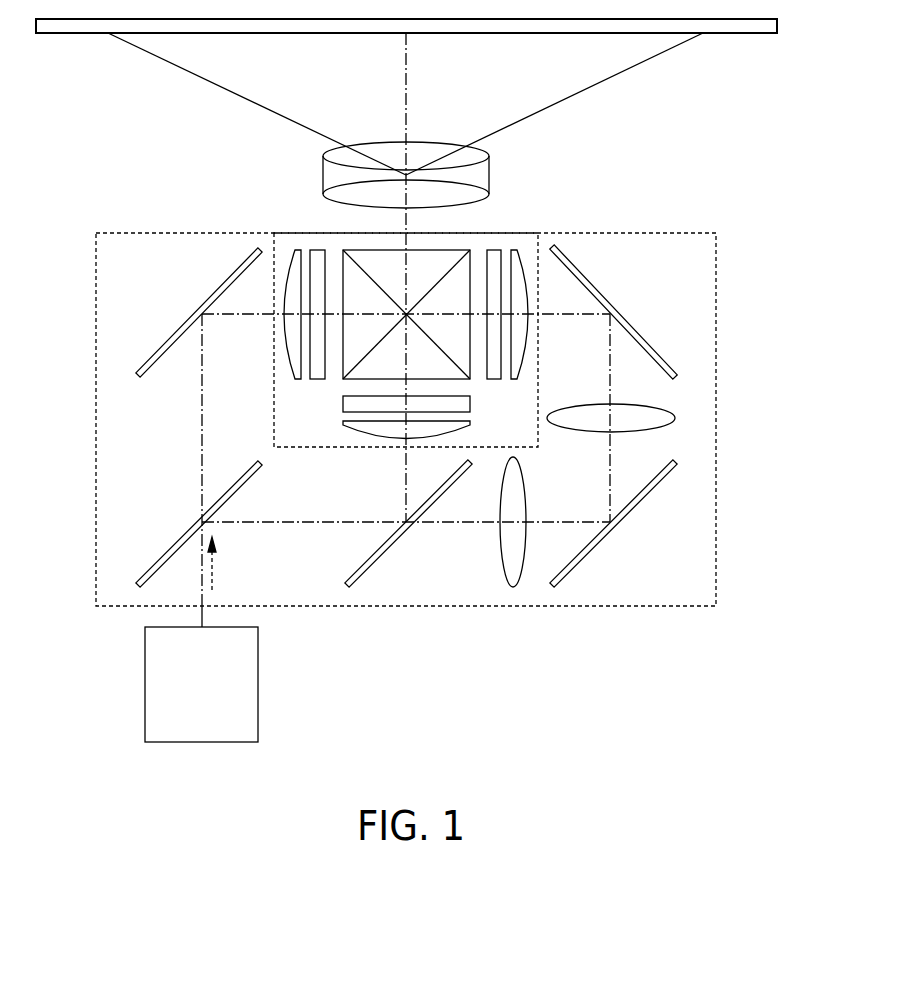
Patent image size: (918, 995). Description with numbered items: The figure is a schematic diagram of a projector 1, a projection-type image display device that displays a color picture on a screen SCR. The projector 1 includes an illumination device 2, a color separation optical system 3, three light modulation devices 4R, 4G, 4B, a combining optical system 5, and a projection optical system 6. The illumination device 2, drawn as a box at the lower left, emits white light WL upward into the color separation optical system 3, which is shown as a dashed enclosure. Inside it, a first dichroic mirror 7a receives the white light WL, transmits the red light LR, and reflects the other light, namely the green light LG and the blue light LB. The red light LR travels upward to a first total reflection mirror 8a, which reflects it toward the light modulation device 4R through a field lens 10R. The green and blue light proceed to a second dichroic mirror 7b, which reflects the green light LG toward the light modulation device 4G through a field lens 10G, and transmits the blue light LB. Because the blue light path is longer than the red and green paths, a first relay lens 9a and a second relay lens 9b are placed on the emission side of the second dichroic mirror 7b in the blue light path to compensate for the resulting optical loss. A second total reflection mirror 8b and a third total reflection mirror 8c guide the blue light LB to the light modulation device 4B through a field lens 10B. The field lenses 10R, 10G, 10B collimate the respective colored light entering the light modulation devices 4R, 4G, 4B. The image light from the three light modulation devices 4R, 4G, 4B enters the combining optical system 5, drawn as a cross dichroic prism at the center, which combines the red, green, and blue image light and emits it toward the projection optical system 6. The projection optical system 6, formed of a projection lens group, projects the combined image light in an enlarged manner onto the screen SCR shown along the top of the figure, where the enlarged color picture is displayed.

The projector 1 is at (728, 208).
The illumination device 2 is at (258, 681).
The color separation optical system 3 is at (96, 368).
The light modulation device 4R is at (318, 247).
The light modulation device 4G is at (343, 404).
The light modulation device 4B is at (491, 247).
The combining optical system 5 is at (427, 258).
The projection optical system 6 is at (388, 155).
The first dichroic mirror 7a is at (167, 553).
The second dichroic mirror 7b is at (387, 552).
The first total reflection mirror 8a is at (177, 328).
The second total reflection mirror 8b is at (633, 507).
The third total reflection mirror 8c is at (637, 332).
The first relay lens 9a is at (499, 540).
The second relay lens 9b is at (663, 413).
The field lens 10R is at (293, 247).
The field lens 10G is at (347, 428).
The field lens 10B is at (514, 247).
The screen SCR is at (745, 34).
The white light WL is at (213, 572).
The red light LR is at (202, 442).
The green light LG is at (406, 481).
The blue light LB is at (610, 470).